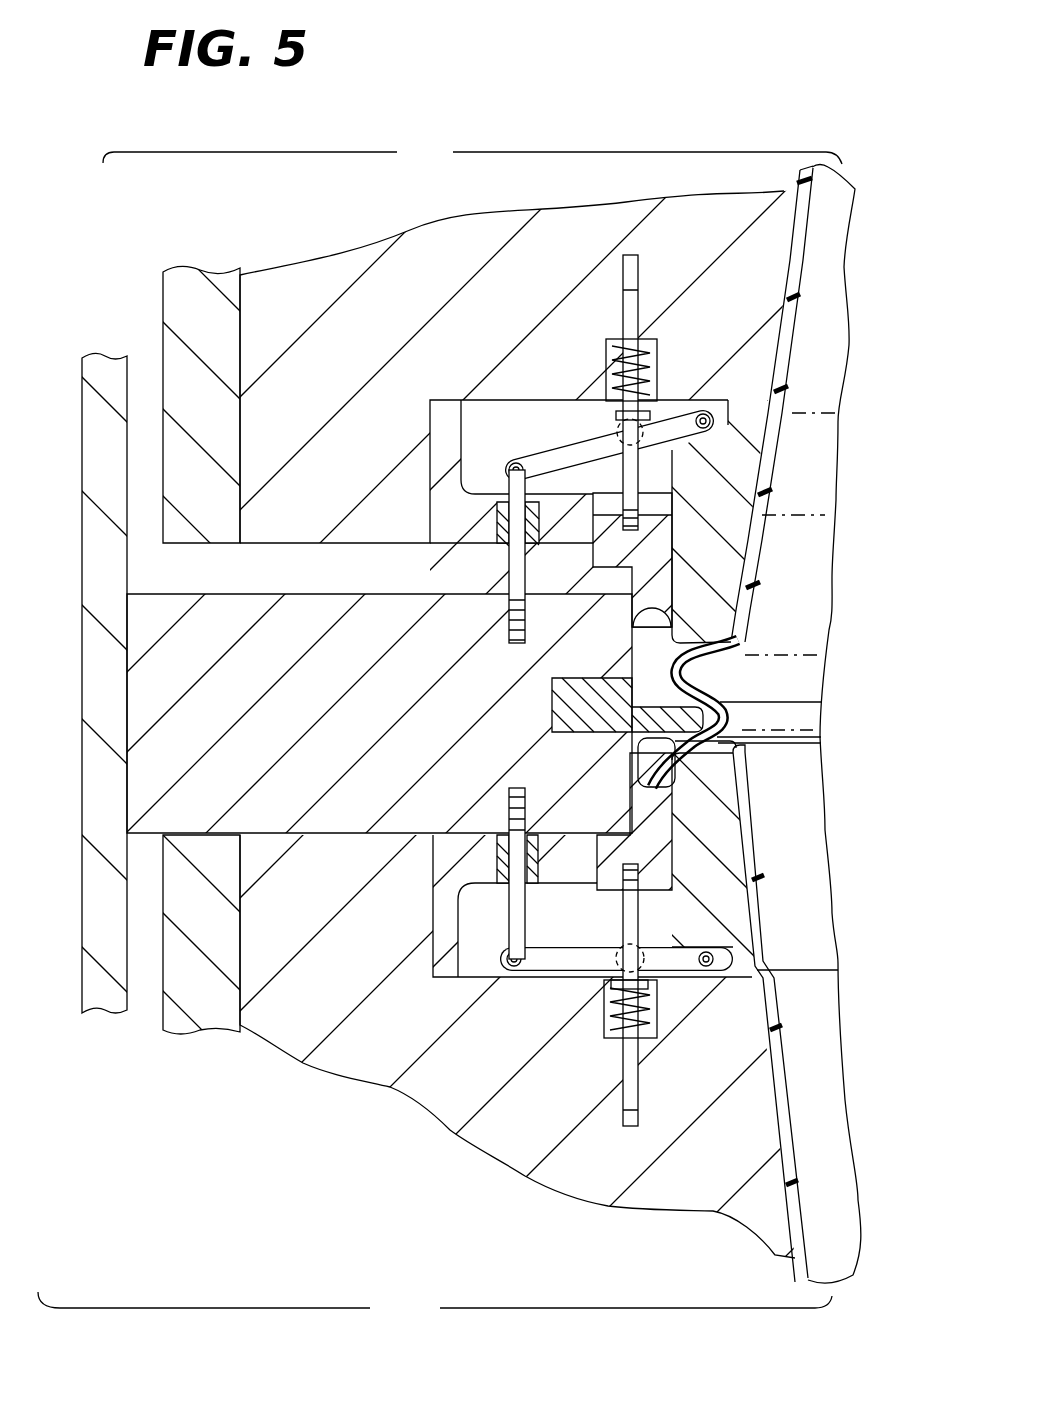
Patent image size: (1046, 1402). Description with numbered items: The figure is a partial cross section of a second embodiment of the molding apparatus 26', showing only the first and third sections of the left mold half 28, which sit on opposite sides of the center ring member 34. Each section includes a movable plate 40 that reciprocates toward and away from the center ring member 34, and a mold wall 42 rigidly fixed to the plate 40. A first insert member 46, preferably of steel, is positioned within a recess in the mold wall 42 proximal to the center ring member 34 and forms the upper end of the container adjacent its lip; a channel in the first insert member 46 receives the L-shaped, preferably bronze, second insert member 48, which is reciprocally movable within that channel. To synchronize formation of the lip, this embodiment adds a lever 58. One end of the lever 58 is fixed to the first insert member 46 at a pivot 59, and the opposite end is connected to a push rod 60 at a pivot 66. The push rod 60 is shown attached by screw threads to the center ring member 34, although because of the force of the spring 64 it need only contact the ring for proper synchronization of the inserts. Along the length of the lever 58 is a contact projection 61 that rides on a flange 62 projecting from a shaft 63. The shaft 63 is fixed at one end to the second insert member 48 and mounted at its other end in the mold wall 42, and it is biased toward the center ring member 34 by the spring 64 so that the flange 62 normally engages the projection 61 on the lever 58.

The molding apparatus 26' is at (440, 681).
The left mold half 28 is at (145, 306).
The center ring member 34 is at (290, 746).
The movable plate 40 is at (213, 416).
The mold wall 42 is at (520, 306).
The first insert member 46 is at (733, 443).
The second insert member 48 is at (660, 550).
The lever 58 is at (567, 455).
The pivot 59 is at (705, 412).
The push rod 60 is at (510, 574).
The contact projection 61 is at (602, 410).
The flange 62 is at (650, 410).
The shaft 63 is at (628, 480).
The spring 64 is at (596, 345).
The pivot 66 is at (513, 462).